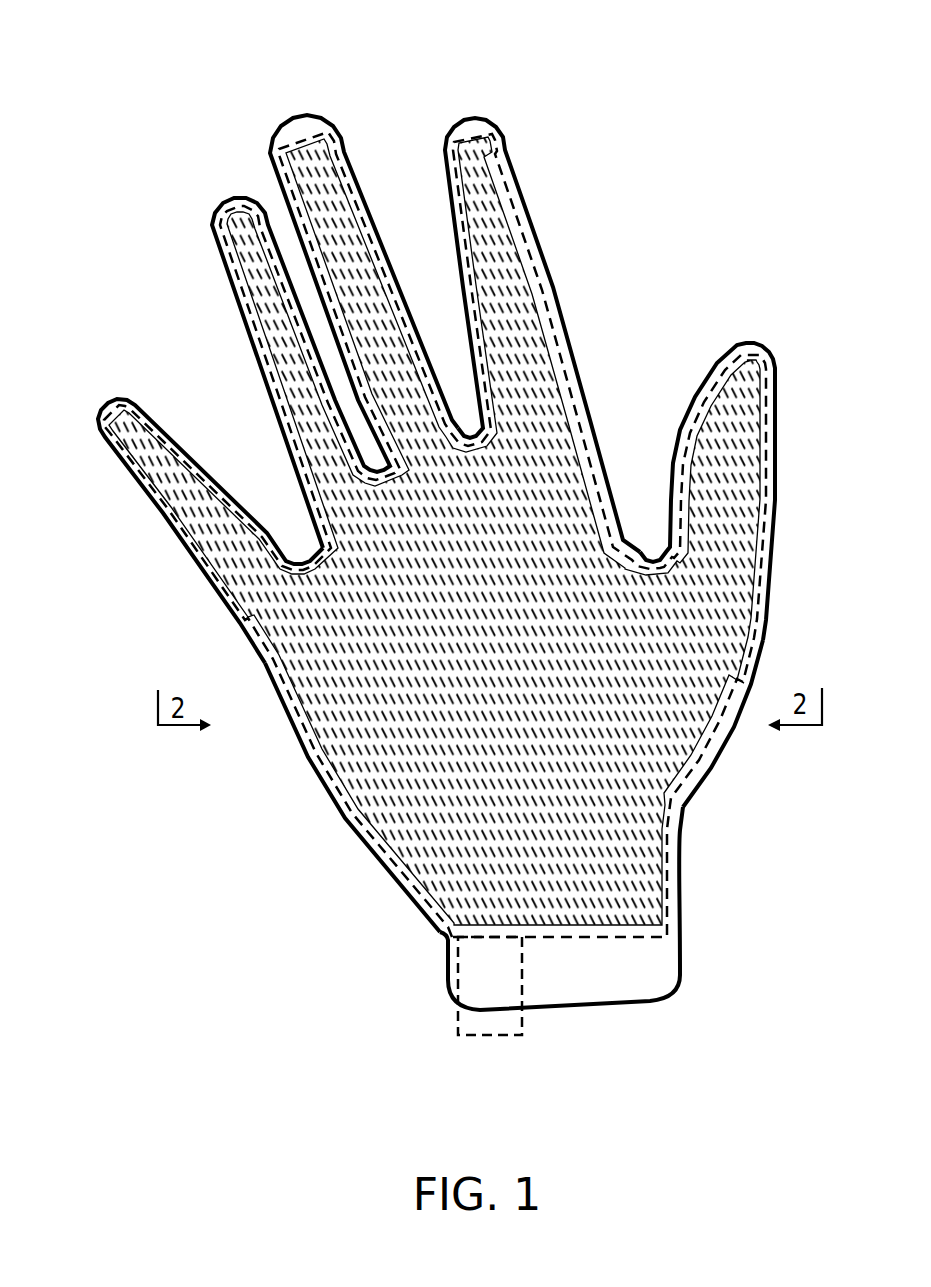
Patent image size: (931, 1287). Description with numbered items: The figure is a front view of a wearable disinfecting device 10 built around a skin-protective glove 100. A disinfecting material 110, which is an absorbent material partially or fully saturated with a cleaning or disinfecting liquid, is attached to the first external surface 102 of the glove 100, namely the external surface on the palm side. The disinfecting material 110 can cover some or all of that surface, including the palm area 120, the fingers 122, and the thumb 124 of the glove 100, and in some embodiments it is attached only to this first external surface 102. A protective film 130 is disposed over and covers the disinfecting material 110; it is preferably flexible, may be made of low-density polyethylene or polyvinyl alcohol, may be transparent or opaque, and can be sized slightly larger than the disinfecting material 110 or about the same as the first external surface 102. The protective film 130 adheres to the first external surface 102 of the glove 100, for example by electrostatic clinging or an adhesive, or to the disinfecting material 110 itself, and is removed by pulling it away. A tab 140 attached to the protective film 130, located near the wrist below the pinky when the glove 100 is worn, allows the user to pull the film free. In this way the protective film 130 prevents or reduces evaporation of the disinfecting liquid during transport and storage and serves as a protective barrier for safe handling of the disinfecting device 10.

The wearable disinfecting device 10 is at (248, 89).
The skin-protective glove 100 is at (450, 973).
The first external surface 102 is at (362, 813).
The disinfecting material 110 is at (526, 672).
The palm area 120 is at (283, 760).
The fingers 122 is at (118, 400).
The thumb 124 is at (750, 342).
The protective film 130 is at (470, 128).
The tab 140 is at (460, 1018).